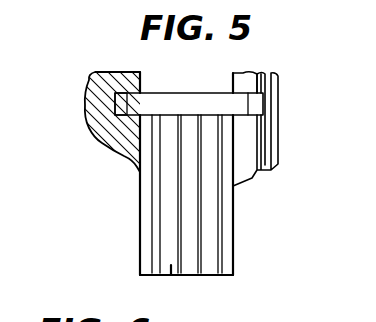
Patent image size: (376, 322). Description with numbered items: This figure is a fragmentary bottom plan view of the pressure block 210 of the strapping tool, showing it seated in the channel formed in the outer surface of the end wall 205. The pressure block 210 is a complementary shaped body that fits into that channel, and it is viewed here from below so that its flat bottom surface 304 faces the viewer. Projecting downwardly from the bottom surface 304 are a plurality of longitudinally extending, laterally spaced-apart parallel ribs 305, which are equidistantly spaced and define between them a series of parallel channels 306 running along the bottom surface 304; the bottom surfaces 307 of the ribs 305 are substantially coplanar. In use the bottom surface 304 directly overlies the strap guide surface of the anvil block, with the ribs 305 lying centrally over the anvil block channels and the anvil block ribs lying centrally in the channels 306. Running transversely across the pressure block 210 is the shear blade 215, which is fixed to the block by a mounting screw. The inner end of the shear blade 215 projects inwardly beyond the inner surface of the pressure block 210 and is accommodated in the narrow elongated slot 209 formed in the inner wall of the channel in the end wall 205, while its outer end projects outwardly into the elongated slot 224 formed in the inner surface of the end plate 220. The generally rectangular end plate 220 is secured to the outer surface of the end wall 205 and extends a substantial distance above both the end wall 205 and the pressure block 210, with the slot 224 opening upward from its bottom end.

The end wall 205 is at (106, 72).
The narrow elongated slot 209 is at (122, 103).
The shear blade 215 is at (198, 102).
The elongated slot 224 is at (253, 76).
The end plate 220 is at (278, 100).
The pressure block 210 is at (140, 197).
The flat bottom surface 304 is at (145, 236).
The ribs 305 is at (217, 202).
The channels 306 is at (147, 274).
The bottom surfaces 307 is at (203, 269).